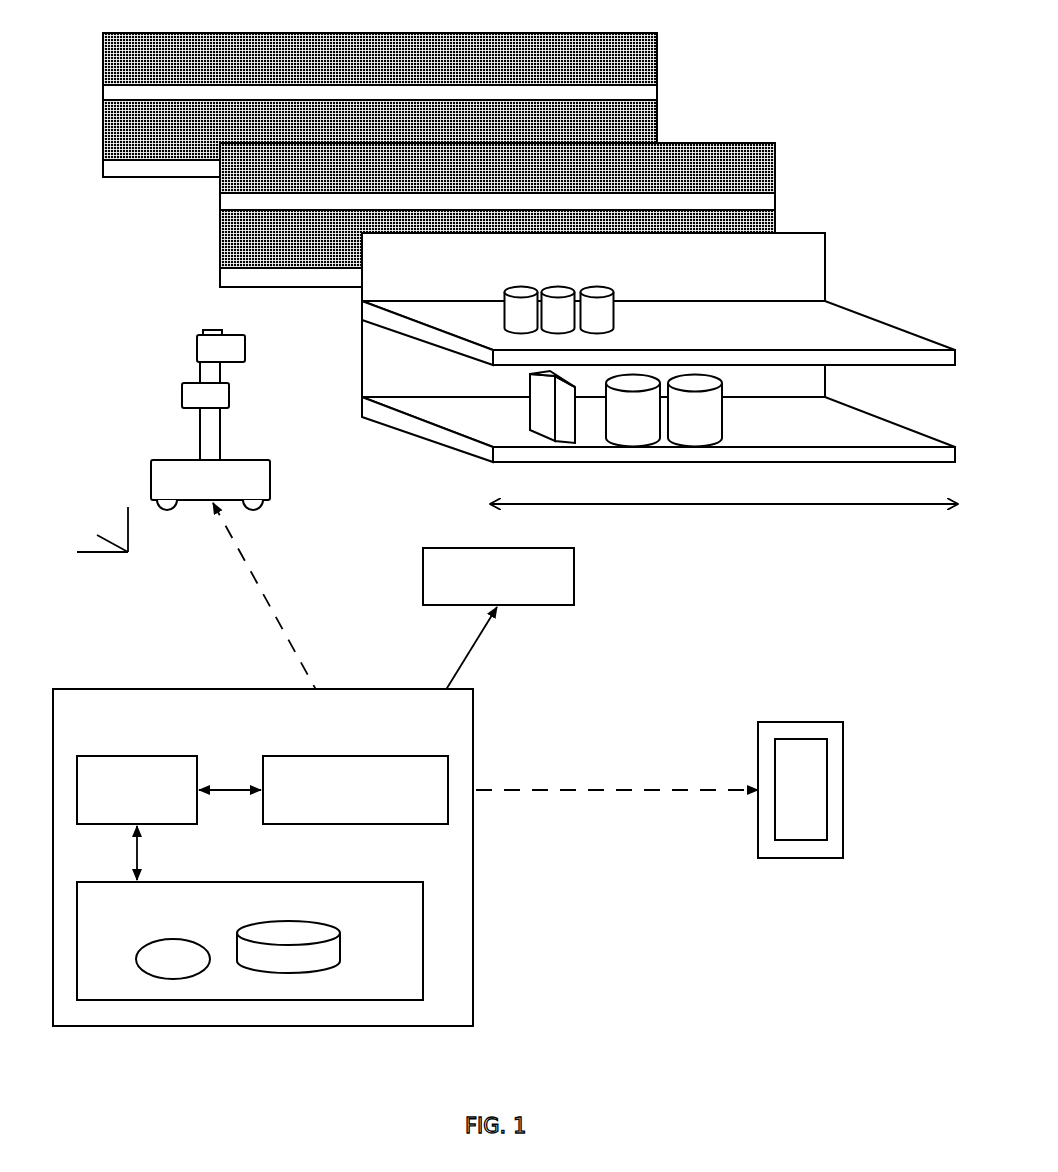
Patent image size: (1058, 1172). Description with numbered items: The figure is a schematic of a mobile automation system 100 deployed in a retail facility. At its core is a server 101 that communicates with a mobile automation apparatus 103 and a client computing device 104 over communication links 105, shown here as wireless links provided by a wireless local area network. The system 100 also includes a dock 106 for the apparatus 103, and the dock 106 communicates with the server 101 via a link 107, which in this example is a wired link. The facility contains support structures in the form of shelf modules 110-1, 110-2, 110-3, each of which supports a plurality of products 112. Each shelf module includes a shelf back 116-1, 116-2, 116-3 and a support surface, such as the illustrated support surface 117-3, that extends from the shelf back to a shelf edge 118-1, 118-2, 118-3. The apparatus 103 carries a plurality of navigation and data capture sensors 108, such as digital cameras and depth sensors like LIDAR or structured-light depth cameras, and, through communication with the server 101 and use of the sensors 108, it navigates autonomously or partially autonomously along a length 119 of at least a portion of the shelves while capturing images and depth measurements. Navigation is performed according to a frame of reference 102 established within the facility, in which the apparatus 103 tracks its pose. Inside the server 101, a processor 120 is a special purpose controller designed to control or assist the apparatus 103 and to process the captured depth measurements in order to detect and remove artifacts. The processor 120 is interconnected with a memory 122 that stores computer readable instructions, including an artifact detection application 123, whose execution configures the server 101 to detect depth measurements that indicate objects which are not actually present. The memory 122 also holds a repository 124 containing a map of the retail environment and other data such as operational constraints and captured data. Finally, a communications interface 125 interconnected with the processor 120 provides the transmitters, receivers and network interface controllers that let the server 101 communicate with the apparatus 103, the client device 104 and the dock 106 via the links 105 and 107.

The mobile automation system 100 is at (667, 983).
The server 101 is at (263, 857).
The frame of reference 102 is at (132, 562).
The mobile automation apparatus 103 is at (210, 407).
The client computing device 104 is at (848, 728).
The communication links 105 is at (485, 646).
The dock 106 is at (498, 576).
The link 107 is at (460, 680).
The navigation and data capture sensors 108 is at (182, 397).
The shelf module 110-1 is at (403, 97).
The shelf module 110-2 is at (492, 195).
The shelf module 110-3 is at (658, 328).
The products 112 is at (530, 407).
The shelf back 116-1 is at (645, 127).
The shelf back 116-2 is at (767, 180).
The shelf back 116-3 is at (808, 278).
The support surface 117-3 is at (823, 325).
The shelf edge 118-1 is at (112, 92).
The shelf edge 118-2 is at (230, 200).
The shelf edge 118-3 is at (890, 360).
The length 119 is at (723, 505).
The processor 120 is at (137, 790).
The memory 122 is at (250, 941).
The artifact detection application 123 is at (173, 959).
The repository 124 is at (340, 948).
The communications interface 125 is at (355, 790).